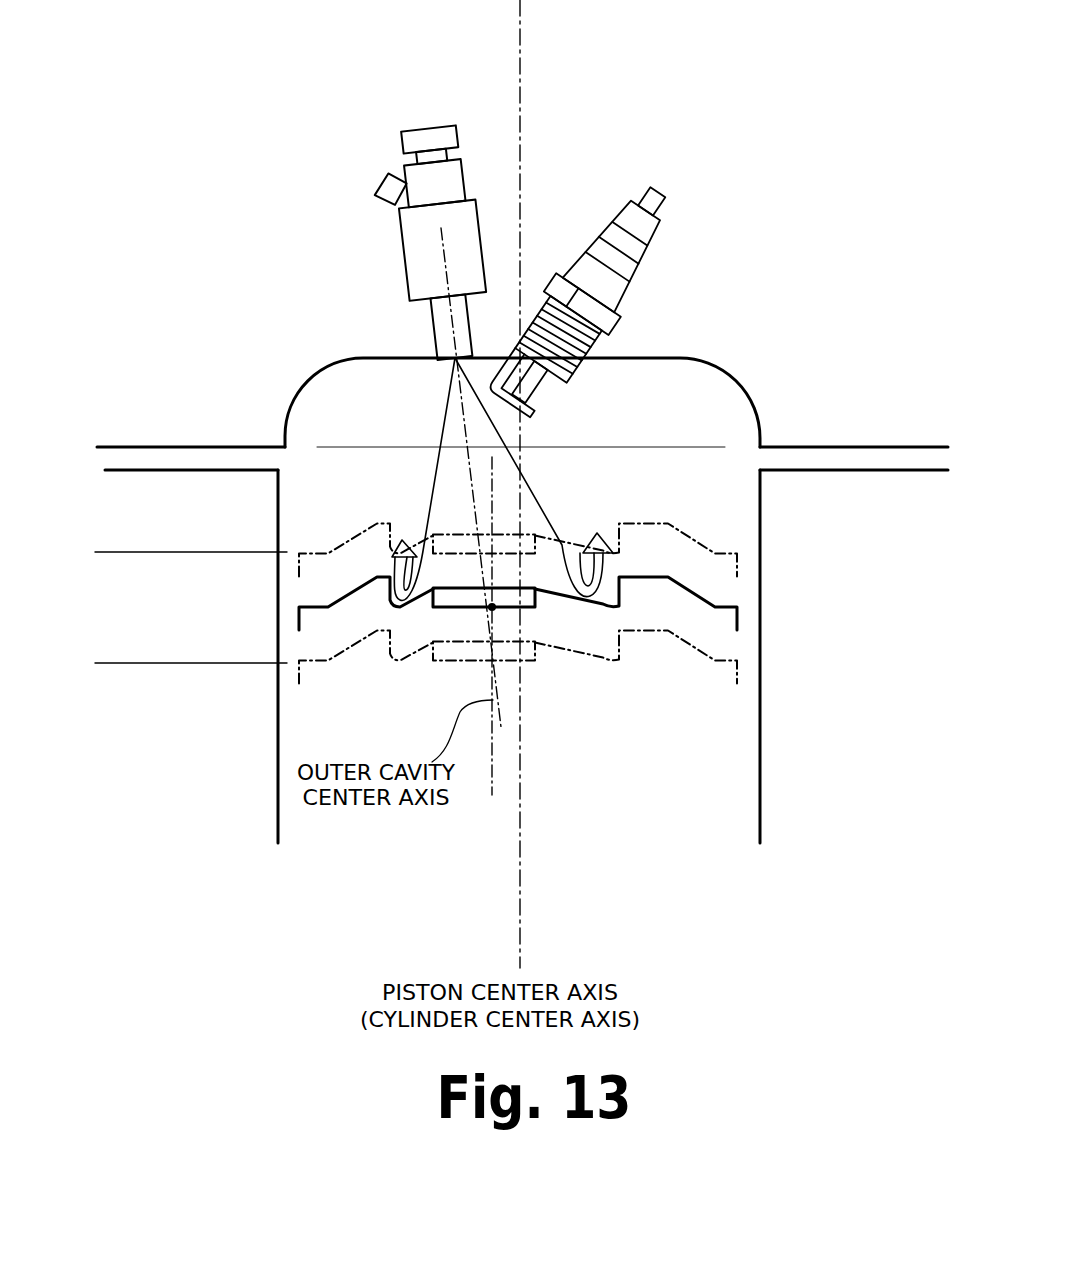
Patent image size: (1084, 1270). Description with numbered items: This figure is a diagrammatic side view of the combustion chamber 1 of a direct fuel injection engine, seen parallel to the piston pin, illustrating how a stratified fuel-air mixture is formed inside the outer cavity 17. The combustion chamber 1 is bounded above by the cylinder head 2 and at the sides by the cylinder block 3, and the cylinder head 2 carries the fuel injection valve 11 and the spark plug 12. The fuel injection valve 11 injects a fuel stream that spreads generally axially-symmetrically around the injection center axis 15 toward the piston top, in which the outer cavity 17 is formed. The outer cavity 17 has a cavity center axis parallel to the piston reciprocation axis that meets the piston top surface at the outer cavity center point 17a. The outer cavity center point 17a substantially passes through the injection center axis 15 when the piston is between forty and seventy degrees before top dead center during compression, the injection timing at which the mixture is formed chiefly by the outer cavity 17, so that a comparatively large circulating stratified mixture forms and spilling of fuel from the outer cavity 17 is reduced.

The combustion chamber 1 is at (641, 409).
The cylinder head 2 is at (806, 416).
The cylinder block 3 is at (791, 566).
The fuel injection valve 11 is at (480, 213).
The spark plug 12 is at (658, 222).
The injection center axis 15 is at (453, 409).
The outer cavity 17 is at (619, 595).
The outer cavity center point 17a is at (492, 607).